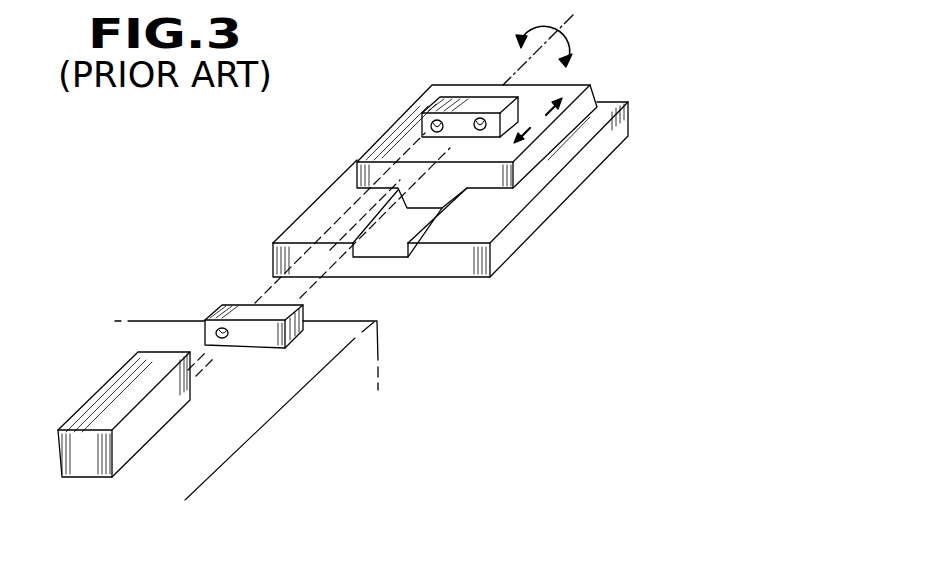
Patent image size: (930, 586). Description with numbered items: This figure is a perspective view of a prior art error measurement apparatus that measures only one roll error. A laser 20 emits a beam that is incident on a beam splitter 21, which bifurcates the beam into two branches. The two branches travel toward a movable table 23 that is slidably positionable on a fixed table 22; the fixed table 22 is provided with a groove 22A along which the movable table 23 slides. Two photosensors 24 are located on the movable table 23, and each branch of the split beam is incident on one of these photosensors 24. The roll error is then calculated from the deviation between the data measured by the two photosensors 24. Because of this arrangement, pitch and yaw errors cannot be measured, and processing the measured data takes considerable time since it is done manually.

The laser 20 is at (100, 400).
The beam splitter 21 is at (222, 304).
The fixed table 22 is at (463, 270).
The groove 22A is at (394, 250).
The movable table 23 is at (383, 142).
The photosensors 24 is at (437, 122).